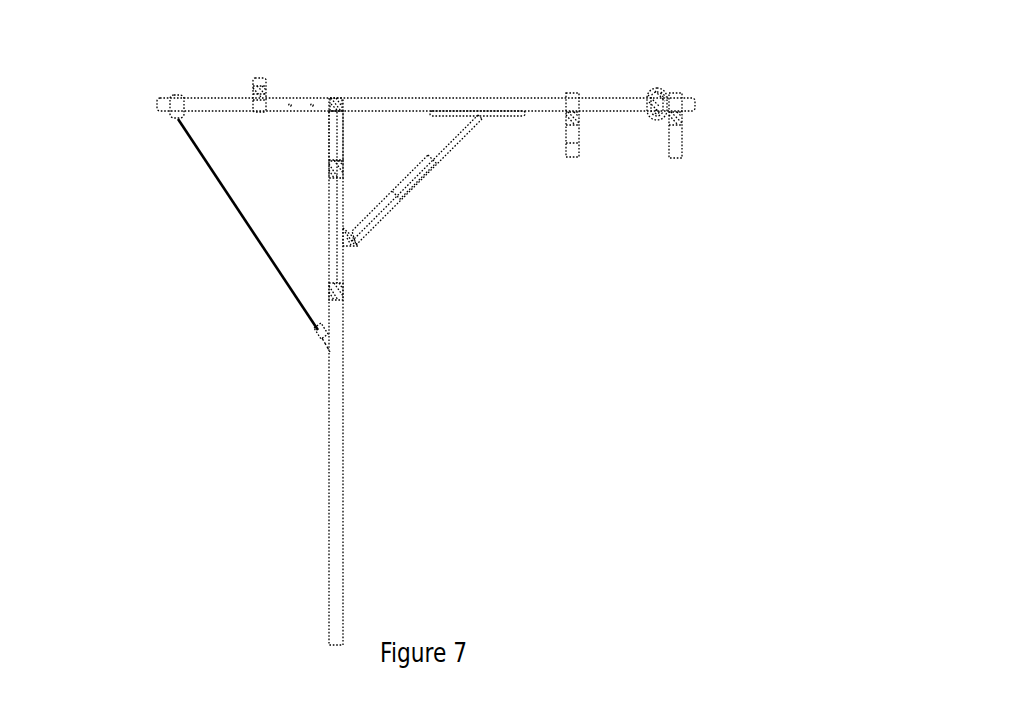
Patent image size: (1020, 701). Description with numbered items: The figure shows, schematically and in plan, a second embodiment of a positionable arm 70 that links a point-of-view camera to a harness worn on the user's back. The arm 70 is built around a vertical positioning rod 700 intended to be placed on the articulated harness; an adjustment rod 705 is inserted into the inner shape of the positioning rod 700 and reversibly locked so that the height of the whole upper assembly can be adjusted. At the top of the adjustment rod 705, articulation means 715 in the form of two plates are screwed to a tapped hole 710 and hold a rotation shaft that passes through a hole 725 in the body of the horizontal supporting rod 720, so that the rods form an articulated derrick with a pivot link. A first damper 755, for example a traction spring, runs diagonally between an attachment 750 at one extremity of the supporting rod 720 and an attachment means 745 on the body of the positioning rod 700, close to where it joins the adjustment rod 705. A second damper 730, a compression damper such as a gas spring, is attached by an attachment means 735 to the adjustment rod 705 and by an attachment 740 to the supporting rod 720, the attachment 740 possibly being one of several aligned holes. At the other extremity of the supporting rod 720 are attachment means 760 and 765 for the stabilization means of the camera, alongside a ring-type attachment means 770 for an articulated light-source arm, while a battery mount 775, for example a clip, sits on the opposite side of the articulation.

The positionable arm 70 is at (392, 32).
The positioning rod 700 is at (385, 371).
The adjustment rod 705 is at (385, 302).
The tapped hole 710 is at (373, 155).
The articulation means 715 is at (283, 139).
The supporting rod 720 is at (426, 69).
The hole 725 is at (317, 69).
The second damper 730 is at (417, 196).
The attachment means 735 is at (310, 226).
The attachment 740 is at (486, 155).
The attachment means 745 is at (299, 363).
The attachment 750 is at (128, 122).
The first damper 755 is at (248, 224).
The attachment means 760 is at (592, 161).
The attachment means 765 is at (692, 161).
The attachment means for articulated arm mount 770 is at (641, 73).
The battery mount 775 is at (239, 61).